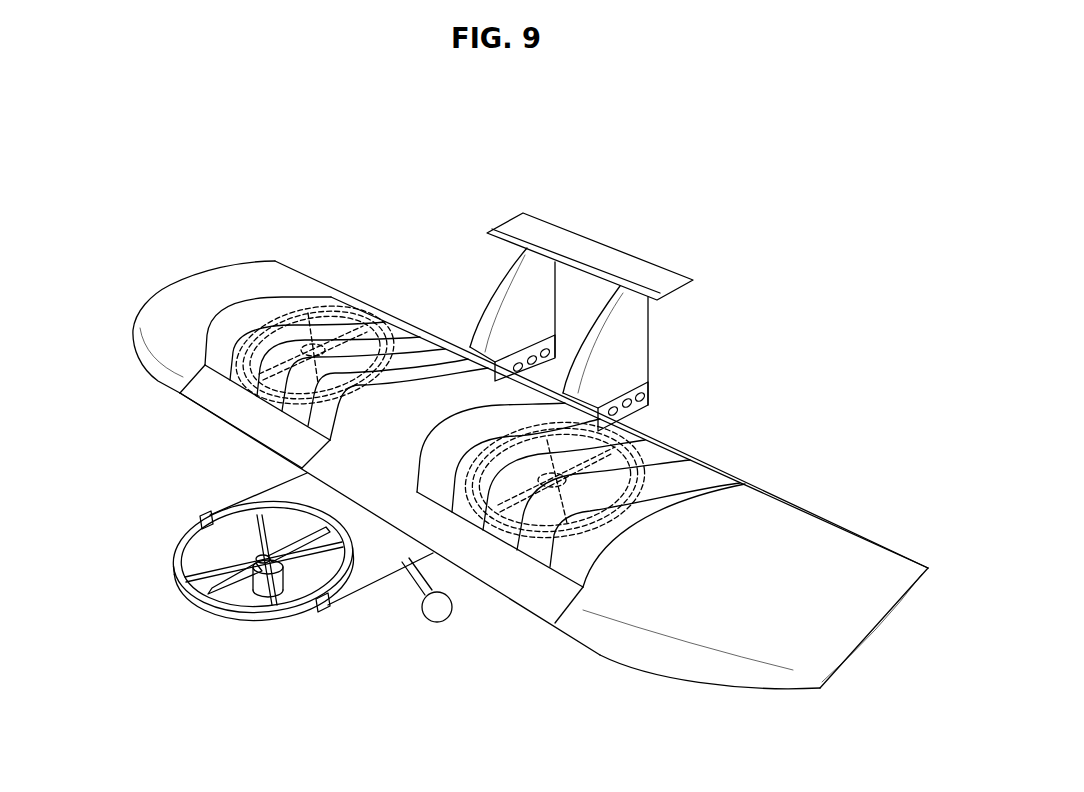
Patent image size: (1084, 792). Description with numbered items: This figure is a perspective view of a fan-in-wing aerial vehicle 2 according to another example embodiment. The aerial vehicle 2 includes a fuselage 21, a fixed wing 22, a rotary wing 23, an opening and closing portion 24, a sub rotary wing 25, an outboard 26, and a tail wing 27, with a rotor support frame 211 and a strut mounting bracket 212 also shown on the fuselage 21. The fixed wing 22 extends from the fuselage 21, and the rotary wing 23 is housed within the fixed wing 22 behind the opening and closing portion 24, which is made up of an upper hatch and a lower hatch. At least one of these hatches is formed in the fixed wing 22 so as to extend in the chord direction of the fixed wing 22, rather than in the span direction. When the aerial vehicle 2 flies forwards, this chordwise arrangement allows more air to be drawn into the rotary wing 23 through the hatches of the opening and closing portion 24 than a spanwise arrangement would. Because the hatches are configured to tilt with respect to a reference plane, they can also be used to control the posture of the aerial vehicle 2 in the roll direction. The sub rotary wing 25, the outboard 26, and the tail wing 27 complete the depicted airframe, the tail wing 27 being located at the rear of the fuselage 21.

The fan-in-wing aerial vehicle 2 is at (447, 131).
The fuselage 21 is at (390, 488).
The rotor support frame 211 is at (312, 478).
The strut mounting bracket 212 is at (535, 398).
The fixed wing 22 is at (408, 327).
The rotary wing 23 is at (238, 365).
The opening and closing portion 24 is at (378, 291).
The sub rotary wing 25 is at (208, 636).
The outboard 26 is at (197, 292).
The tail wing 27 is at (598, 252).